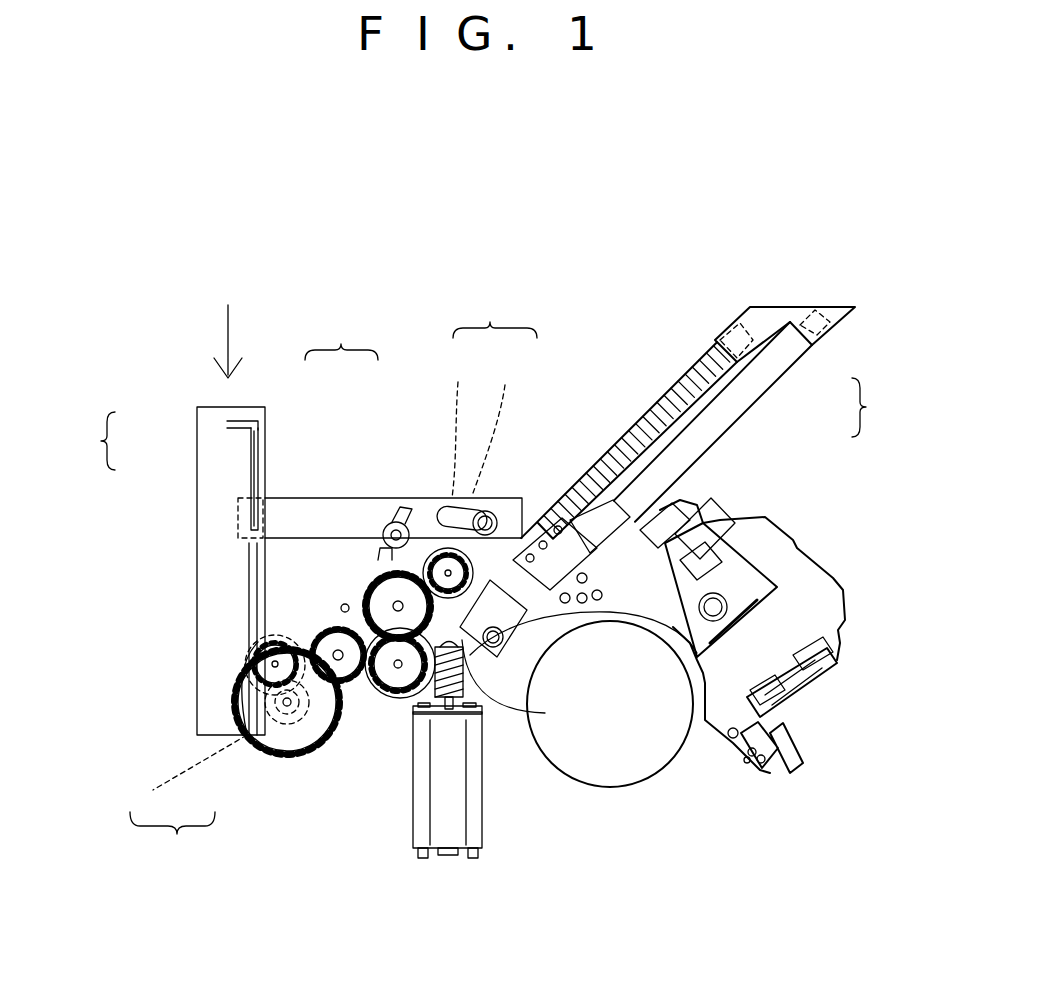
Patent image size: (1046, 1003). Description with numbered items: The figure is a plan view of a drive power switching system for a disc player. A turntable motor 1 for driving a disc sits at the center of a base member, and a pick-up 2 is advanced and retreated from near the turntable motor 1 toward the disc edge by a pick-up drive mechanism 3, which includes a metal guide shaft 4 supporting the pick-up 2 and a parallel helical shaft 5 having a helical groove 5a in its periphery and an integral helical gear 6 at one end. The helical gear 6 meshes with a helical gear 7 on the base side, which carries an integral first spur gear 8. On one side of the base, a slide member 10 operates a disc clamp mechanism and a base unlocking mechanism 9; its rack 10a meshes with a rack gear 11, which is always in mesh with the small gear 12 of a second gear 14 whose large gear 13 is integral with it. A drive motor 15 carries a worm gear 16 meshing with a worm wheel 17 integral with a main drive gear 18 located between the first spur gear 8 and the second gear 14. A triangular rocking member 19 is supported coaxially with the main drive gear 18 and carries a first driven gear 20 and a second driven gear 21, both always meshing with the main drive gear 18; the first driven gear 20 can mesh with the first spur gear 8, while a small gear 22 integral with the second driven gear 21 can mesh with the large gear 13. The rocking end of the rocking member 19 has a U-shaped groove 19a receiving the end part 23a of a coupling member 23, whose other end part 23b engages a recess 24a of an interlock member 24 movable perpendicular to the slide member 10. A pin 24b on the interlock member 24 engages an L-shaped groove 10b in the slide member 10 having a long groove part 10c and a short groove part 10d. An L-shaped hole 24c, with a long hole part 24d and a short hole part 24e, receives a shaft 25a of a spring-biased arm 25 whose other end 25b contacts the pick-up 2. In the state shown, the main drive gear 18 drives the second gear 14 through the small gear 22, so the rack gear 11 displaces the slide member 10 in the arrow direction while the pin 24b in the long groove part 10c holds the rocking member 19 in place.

The turntable motor 1 is at (665, 745).
The pick-up 2 is at (835, 597).
The pick-up drive mechanism 3 is at (801, 372).
The guide shaft 4 is at (778, 378).
The helical shaft 5 is at (693, 403).
The helical groove 5a is at (660, 400).
The helical gear 6 is at (523, 670).
The helical gear 7 is at (543, 628).
The first spur gear 8 is at (530, 703).
The base unlocking mechanism 9 is at (86, 610).
The slide member 10 is at (195, 705).
The rack 10a is at (250, 575).
The L-shaped groove 10b is at (86, 441).
The long groove part 10c is at (250, 465).
The short groove part 10d is at (240, 428).
The rack gear 11 is at (258, 642).
The small gear 12 is at (192, 776).
The large gear 13 is at (268, 750).
The second gear 14 is at (172, 839).
The drive motor 15 is at (483, 818).
The worm gear 16 is at (463, 685).
The worm wheel 17 is at (381, 697).
The main drive gear 18 is at (377, 690).
The rocking member 19 is at (341, 608).
The U-shaped groove 19a is at (377, 563).
The first driven gear 20 is at (375, 592).
The second driven gear 21 is at (358, 690).
The small gear 22 is at (300, 758).
The coupling member 23 is at (341, 339).
The end part 23a is at (373, 543).
The other end part 23b is at (383, 543).
The interlock member 24 is at (292, 498).
The recess 24a is at (397, 518).
The pin 24b is at (252, 522).
The L-shaped hole 24c is at (495, 318).
The long hole part 24d is at (457, 424).
The short hole part 24e is at (506, 421).
The arm 25 is at (488, 508).
The shaft 25a is at (437, 493).
The other end 25b is at (520, 517).